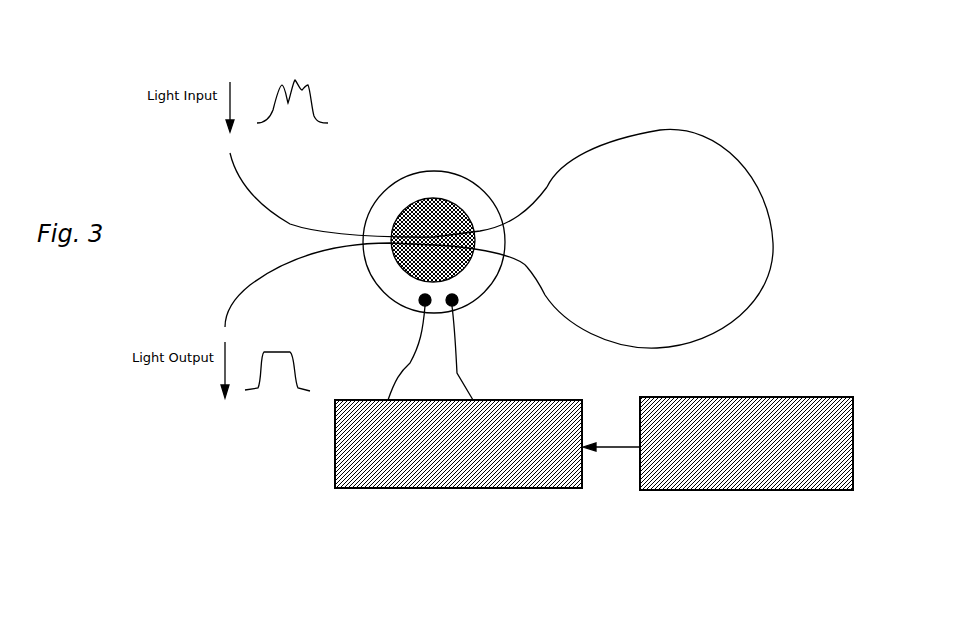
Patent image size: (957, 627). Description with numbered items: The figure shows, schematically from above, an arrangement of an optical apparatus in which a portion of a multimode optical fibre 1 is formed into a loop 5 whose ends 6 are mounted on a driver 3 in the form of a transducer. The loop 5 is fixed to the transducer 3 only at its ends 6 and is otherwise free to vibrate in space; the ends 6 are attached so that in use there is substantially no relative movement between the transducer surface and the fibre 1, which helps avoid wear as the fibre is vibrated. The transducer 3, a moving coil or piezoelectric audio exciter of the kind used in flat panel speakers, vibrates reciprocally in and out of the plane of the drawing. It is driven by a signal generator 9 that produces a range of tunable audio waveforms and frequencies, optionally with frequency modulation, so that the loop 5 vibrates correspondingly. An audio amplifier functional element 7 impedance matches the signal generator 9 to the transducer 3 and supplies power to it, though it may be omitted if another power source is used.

The multimode optical fibre 1 is at (256, 187).
The driver 3 is at (488, 170).
The loop 5 is at (778, 188).
The ends 6 is at (419, 227).
The audio amplifier functional element 7 is at (410, 497).
The signal generator 9 is at (723, 498).